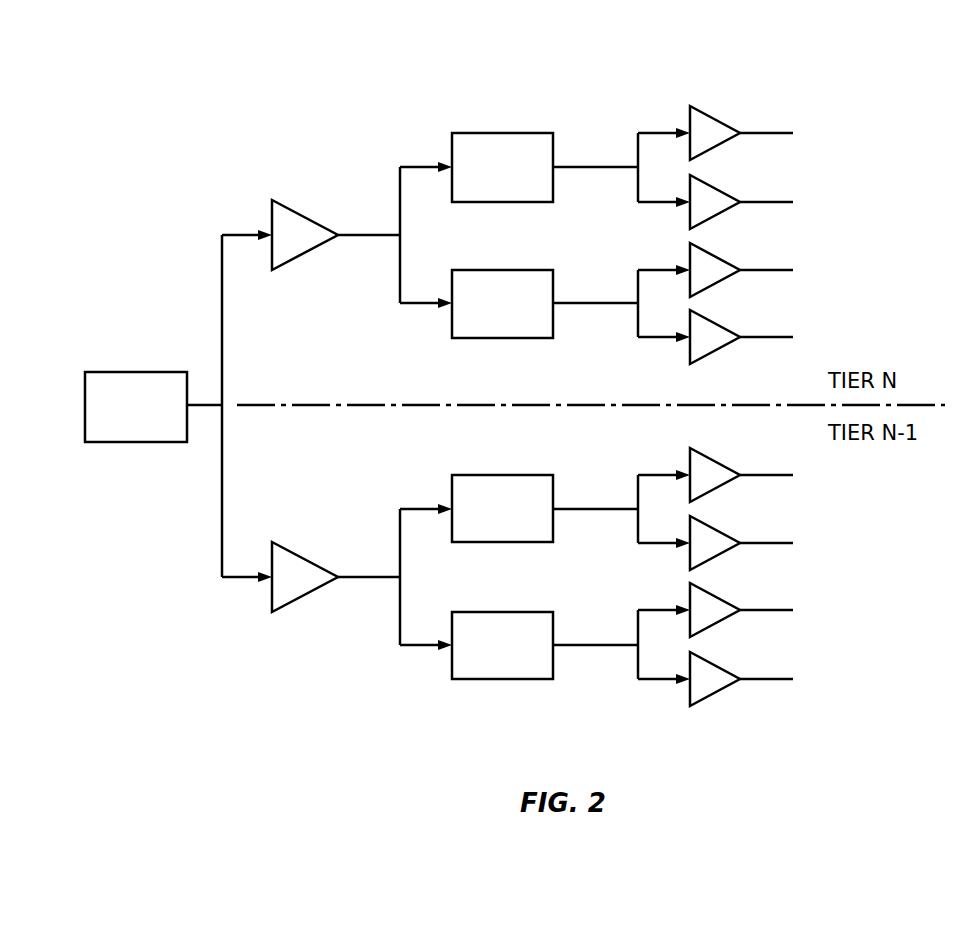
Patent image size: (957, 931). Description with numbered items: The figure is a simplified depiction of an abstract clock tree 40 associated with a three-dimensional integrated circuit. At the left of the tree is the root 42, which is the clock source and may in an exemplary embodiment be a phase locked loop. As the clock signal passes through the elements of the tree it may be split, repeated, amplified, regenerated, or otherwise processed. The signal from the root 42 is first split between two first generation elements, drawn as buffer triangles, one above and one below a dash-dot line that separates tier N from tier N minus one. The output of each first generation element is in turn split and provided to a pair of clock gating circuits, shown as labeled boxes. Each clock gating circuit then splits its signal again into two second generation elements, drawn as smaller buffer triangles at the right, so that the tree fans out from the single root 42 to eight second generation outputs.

The clock tree 40 is at (658, 58).
The root 42 is at (118, 442).